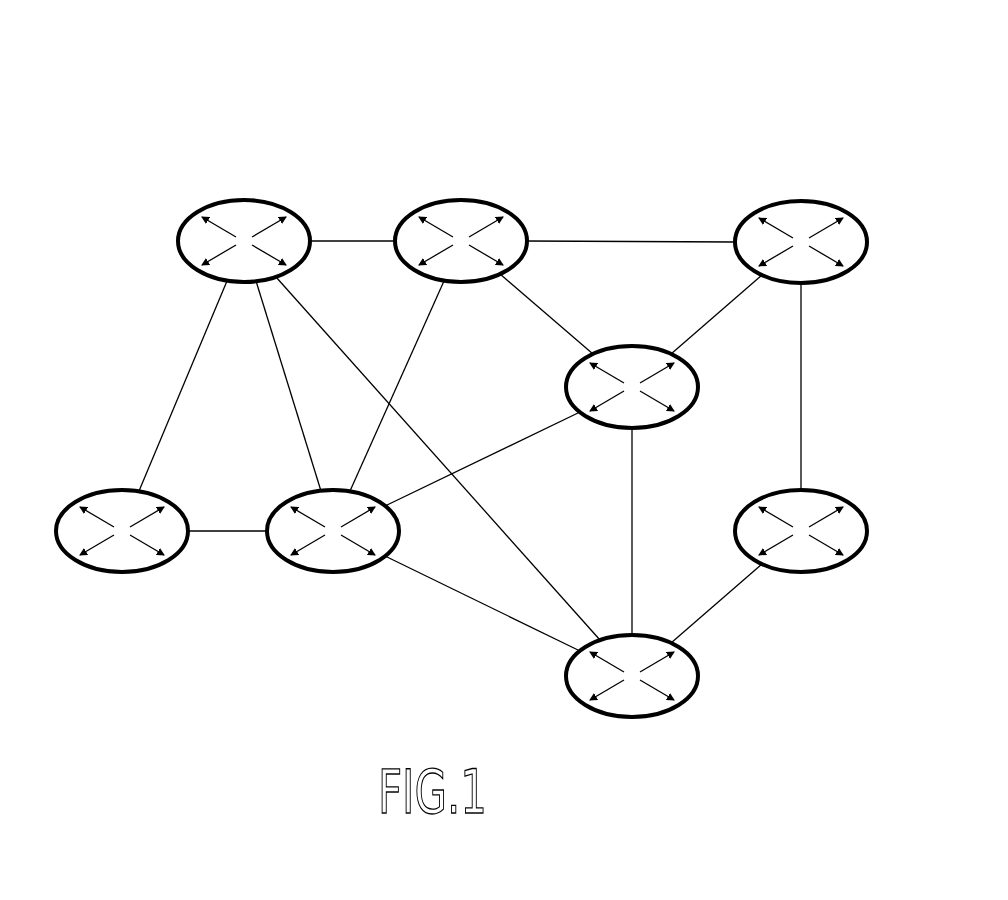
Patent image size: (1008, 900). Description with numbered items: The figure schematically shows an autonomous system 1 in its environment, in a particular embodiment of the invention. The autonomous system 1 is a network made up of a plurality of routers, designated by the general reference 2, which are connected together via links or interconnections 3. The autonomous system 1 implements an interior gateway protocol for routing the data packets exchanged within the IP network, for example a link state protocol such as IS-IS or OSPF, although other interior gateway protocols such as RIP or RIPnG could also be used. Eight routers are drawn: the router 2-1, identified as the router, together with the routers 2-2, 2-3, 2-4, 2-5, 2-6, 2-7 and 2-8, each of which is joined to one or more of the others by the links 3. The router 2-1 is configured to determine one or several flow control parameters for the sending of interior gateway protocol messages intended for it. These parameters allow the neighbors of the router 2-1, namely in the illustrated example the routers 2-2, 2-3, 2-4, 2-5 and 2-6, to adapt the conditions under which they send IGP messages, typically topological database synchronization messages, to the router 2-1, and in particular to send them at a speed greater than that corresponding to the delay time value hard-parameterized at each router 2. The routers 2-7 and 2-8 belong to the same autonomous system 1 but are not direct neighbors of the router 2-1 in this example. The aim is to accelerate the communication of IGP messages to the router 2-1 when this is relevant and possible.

The autonomous system 1 is at (630, 132).
The router 2 is at (278, 569).
The link 3 is at (370, 243).
The router 2-1 is at (333, 574).
The router 2-2 is at (632, 719).
The router 2-3 is at (632, 357).
The router 2-4 is at (461, 212).
The router 2-5 is at (243, 212).
The router 2-6 is at (122, 574).
The router 2-7 is at (801, 574).
The router 2-8 is at (801, 212).